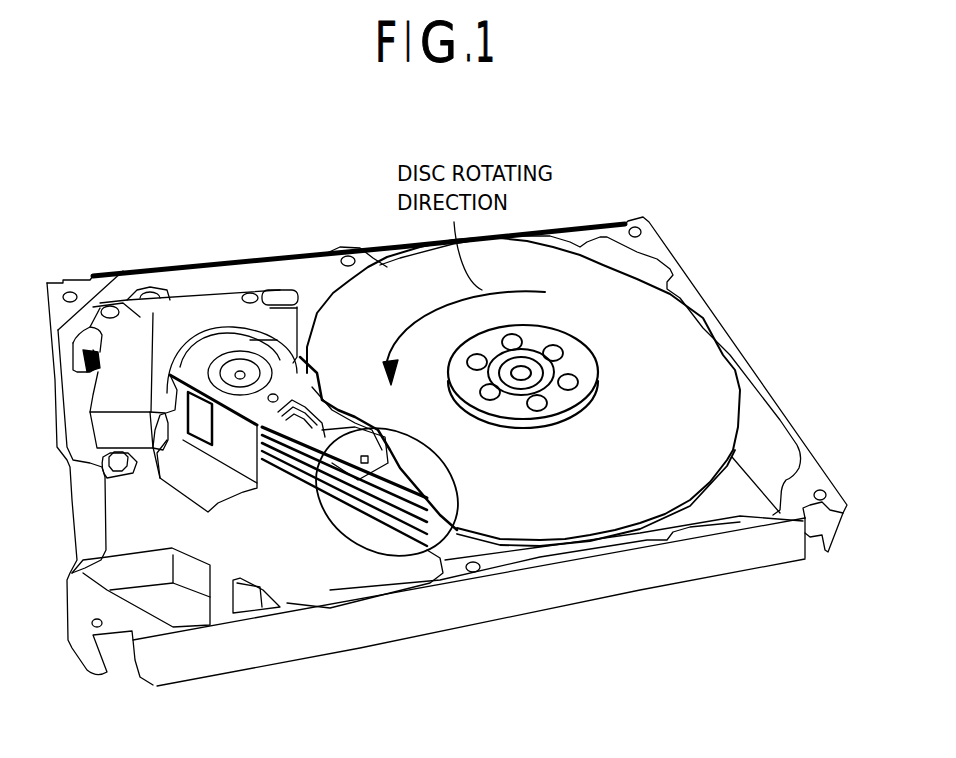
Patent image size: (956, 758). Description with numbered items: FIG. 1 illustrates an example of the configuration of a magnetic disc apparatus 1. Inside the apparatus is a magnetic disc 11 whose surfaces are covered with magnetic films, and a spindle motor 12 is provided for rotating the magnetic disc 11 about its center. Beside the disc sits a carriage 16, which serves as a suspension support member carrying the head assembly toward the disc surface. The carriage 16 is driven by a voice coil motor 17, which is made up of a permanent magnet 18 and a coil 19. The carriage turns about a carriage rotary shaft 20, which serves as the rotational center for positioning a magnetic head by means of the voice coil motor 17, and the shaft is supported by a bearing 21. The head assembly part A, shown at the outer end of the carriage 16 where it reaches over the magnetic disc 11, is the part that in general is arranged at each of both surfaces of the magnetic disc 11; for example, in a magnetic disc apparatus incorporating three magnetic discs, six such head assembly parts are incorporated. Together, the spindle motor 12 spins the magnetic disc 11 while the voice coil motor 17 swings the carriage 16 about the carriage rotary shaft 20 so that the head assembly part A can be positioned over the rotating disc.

The magnetic disc apparatus 1 is at (673, 248).
The magnetic disc 11 is at (623, 457).
The spindle motor 12 is at (518, 376).
The carriage 16 is at (283, 487).
The voice coil motor 17 is at (241, 356).
The permanent magnet 18 is at (143, 343).
The coil 19 is at (223, 350).
The carriage rotary shaft 20 is at (273, 373).
The bearing 21 is at (242, 350).
The head assembly part A is at (378, 540).